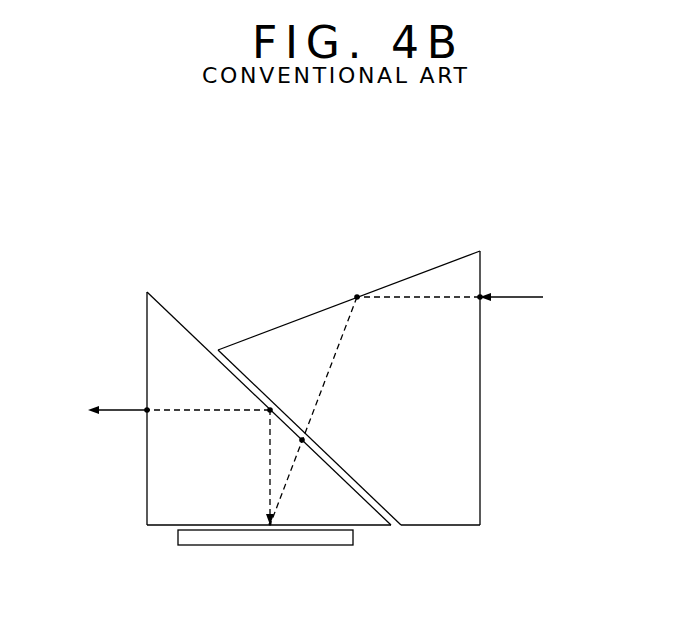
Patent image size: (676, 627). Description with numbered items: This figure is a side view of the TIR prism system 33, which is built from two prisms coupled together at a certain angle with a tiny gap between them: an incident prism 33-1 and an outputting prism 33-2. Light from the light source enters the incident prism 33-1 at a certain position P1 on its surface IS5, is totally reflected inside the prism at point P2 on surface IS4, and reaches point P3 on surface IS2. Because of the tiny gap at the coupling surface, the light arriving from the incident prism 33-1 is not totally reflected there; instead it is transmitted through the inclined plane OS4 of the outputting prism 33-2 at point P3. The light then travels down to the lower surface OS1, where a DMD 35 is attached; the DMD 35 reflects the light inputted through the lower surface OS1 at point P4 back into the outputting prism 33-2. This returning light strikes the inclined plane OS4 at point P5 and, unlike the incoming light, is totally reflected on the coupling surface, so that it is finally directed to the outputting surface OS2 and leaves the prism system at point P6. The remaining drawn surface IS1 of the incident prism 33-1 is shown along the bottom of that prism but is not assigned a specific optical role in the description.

The TIR prism system 33 is at (296, 391).
The incident prism 33-1 is at (460, 256).
The outputting prism 33-2 is at (147, 292).
The DMD 35 is at (340, 540).
The lower surface of the outputting prism OS1 is at (168, 525).
The outputting surface OS2 is at (147, 370).
The inclined plane of the outputting prism OS4 is at (178, 317).
The surface of the incident prism IS1 is at (452, 530).
The surface of the incident prism IS2 is at (267, 380).
The surface of the incident prism IS4 is at (430, 269).
The surface of the incident prism IS5 is at (480, 430).
The incident position P1 is at (479, 299).
The total reflection point P2 is at (358, 299).
The transmission point P3 is at (304, 439).
The reflection point on lower surface P4 is at (267, 521).
The total reflection point on inclined plane P5 is at (268, 412).
The output point P6 is at (148, 412).